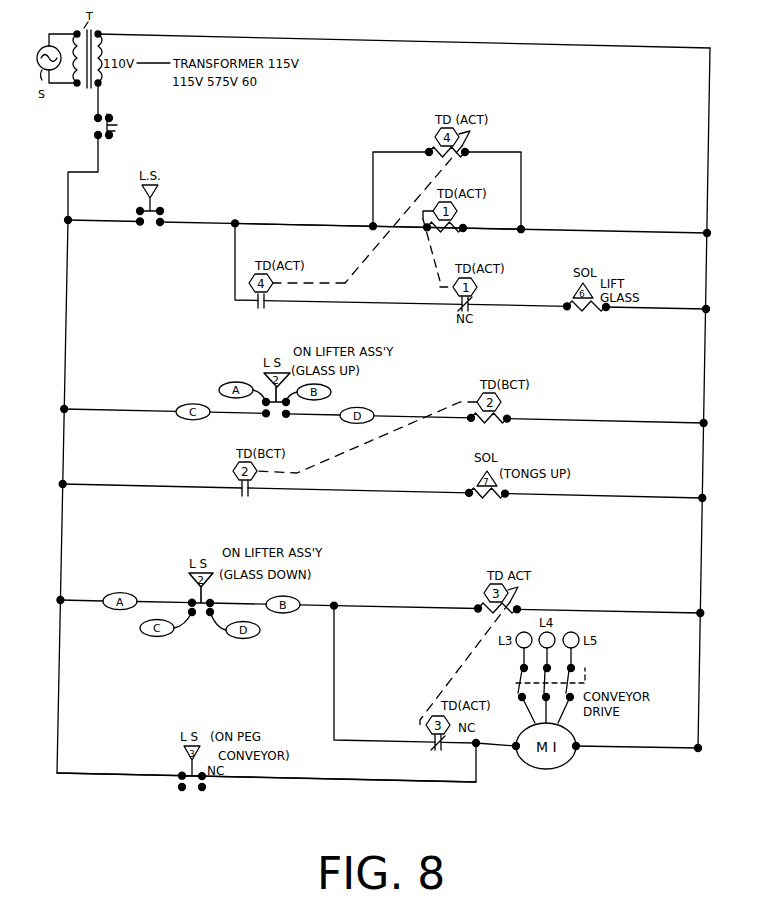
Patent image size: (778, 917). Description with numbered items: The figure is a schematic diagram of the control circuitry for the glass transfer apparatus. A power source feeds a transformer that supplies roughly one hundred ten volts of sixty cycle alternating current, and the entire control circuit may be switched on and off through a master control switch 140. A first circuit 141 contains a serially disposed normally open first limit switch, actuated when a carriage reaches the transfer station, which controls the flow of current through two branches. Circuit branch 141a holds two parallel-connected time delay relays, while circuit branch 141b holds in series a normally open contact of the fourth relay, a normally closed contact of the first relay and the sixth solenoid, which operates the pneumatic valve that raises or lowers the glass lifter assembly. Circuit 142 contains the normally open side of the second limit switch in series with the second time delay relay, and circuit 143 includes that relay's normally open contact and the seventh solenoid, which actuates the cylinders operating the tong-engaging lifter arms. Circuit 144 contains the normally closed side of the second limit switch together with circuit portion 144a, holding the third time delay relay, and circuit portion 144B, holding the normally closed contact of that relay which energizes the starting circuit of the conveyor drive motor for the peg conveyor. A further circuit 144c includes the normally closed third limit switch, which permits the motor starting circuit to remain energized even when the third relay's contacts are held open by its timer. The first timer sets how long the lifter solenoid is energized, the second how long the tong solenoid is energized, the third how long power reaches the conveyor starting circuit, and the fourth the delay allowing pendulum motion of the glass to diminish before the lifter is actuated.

The master control switch 140 is at (109, 118).
The first circuit 141 is at (373, 226).
The circuit branch 141a is at (378, 220).
The circuit branch 141b is at (456, 267).
The circuit 142 is at (368, 415).
The circuit 143 is at (367, 490).
The circuit 144 is at (183, 602).
The circuit portion 144a is at (519, 604).
The circuit portion 144B is at (425, 676).
The circuit 144c is at (266, 772).